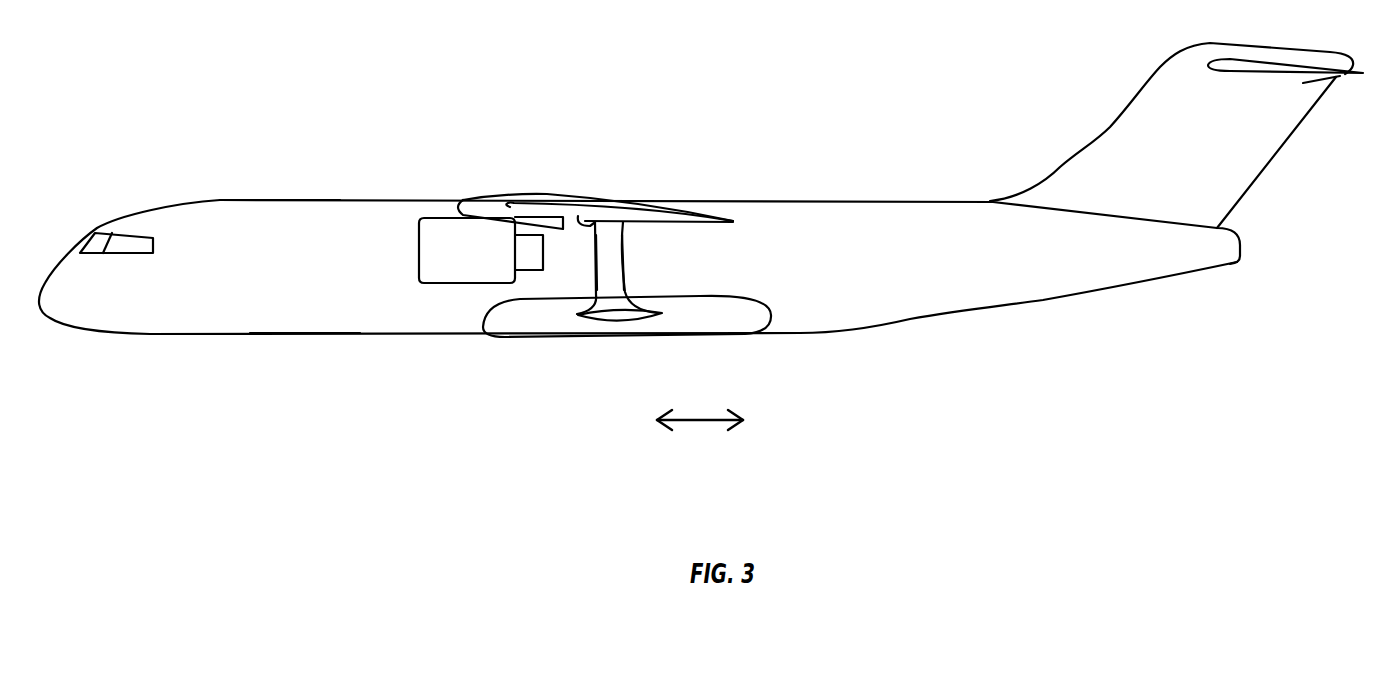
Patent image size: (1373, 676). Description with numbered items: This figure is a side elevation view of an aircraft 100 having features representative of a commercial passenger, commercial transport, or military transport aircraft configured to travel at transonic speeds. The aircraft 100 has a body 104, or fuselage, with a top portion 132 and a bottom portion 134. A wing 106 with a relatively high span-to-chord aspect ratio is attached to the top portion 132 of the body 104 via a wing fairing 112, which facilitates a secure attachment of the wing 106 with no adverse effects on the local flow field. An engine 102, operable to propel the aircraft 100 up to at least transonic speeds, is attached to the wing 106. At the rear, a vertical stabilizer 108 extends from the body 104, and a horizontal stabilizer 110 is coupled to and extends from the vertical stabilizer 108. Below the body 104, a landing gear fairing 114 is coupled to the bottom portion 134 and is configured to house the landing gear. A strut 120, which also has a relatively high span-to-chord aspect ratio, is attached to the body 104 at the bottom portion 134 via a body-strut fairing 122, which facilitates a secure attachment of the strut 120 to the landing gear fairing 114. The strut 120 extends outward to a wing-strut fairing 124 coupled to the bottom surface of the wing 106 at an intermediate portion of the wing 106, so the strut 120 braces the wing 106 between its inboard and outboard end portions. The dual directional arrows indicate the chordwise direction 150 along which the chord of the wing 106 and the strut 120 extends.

The aircraft 100 is at (190, 86).
The engine 102 is at (435, 233).
The body 104 is at (219, 192).
The wing 106 is at (690, 203).
The vertical stabilizer 108 is at (1237, 152).
The horizontal stabilizer 110 is at (1247, 60).
The wing fairing 112 is at (465, 208).
The landing gear fairing 114 is at (703, 327).
The strut 120 is at (580, 274).
The body-strut fairing 122 is at (615, 317).
The wing-strut fairing 124 is at (578, 213).
The top portion 132 is at (288, 200).
The bottom portion 134 is at (328, 336).
The chordwise direction 150 is at (710, 422).